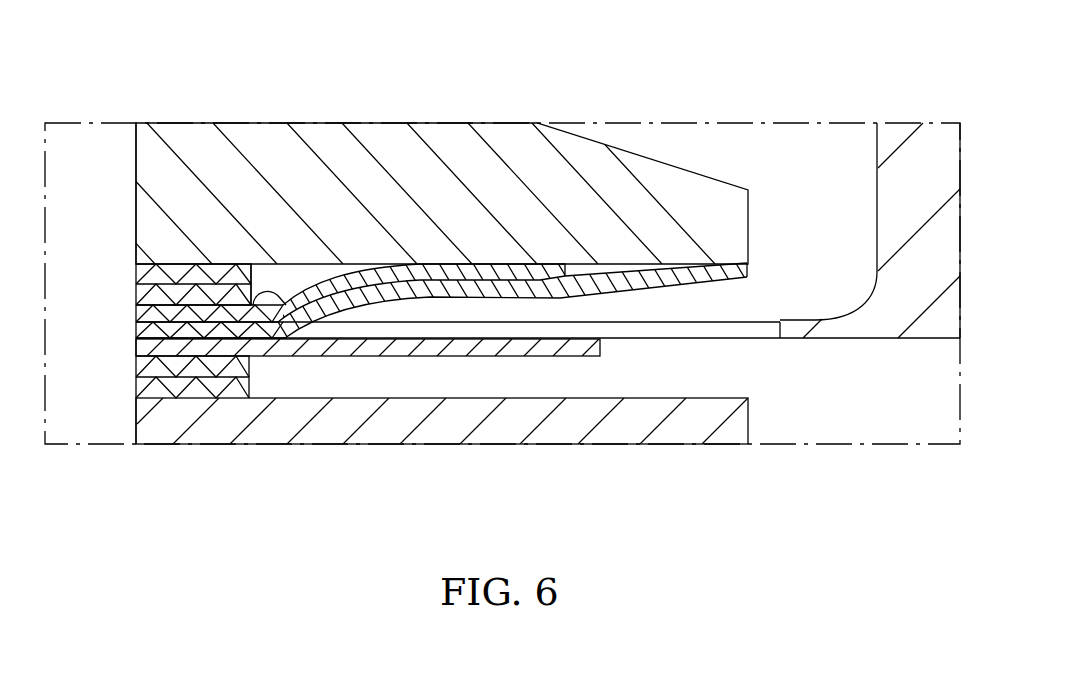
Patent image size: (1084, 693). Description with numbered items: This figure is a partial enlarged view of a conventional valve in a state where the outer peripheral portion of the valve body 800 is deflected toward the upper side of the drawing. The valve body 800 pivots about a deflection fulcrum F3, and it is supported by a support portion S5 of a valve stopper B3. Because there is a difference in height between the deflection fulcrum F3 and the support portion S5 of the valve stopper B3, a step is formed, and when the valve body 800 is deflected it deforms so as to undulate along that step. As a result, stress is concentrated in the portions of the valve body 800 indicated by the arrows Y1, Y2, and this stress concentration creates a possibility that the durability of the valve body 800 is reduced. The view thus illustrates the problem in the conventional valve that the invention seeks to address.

The valve stopper B3 is at (675, 163).
The arrow Y1 is at (291, 276).
The support portion S5 is at (750, 276).
The valve body 800 is at (711, 296).
The deflection fulcrum F3 is at (288, 300).
The arrow Y2 is at (427, 325).